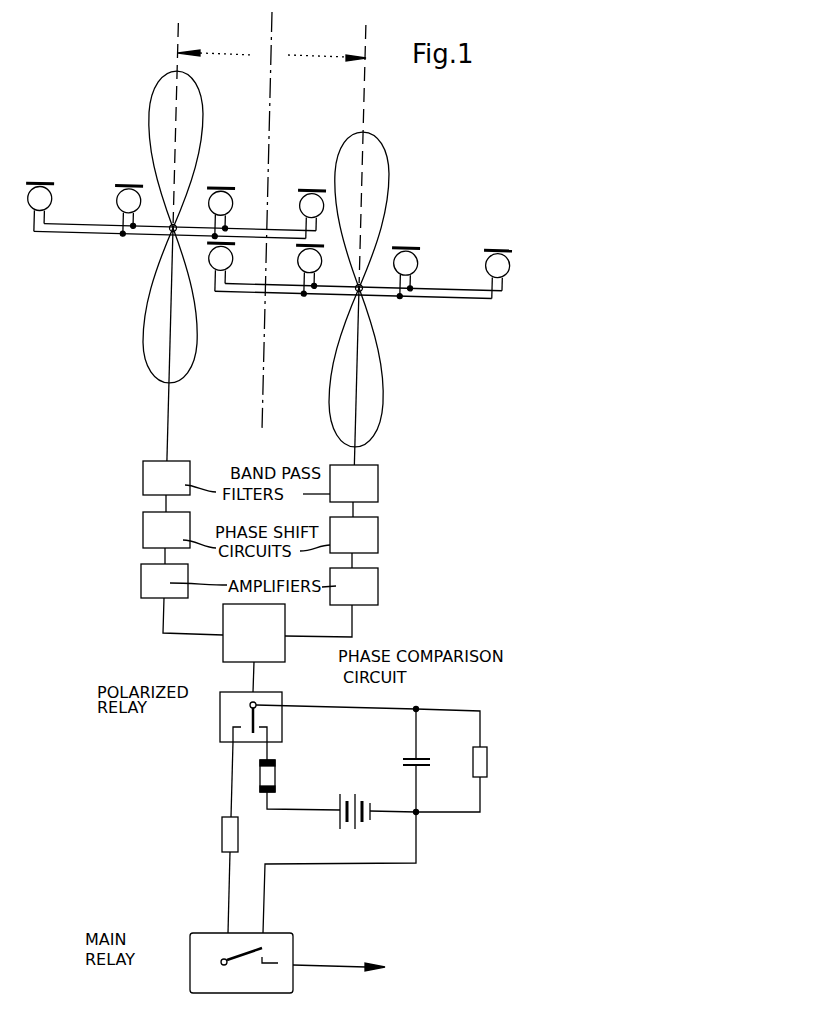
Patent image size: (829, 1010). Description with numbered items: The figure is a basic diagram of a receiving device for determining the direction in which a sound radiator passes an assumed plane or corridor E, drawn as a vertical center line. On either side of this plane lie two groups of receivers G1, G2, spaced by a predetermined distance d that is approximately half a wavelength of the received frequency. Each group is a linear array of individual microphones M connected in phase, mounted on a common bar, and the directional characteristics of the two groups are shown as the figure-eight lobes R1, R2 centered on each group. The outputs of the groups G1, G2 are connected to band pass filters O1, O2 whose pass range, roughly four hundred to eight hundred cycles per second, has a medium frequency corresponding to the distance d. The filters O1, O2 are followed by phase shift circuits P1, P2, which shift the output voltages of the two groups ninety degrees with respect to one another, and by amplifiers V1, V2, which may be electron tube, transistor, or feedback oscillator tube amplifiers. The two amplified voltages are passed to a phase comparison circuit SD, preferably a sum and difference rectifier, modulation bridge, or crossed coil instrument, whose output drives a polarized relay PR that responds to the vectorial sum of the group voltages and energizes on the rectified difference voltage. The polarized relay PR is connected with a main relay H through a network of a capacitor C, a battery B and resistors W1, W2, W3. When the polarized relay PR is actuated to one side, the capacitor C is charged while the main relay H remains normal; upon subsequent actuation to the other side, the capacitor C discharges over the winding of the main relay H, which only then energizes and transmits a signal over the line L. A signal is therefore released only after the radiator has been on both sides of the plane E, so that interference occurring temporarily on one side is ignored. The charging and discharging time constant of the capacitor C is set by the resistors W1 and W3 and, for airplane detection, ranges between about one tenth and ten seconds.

The directional characteristic of first group of receivers R1 is at (164, 101).
The directional characteristic of second group of receivers R2 is at (373, 168).
The microphones M is at (118, 200).
The first group of receivers G1 is at (100, 236).
The second group of receivers G2 is at (454, 302).
The plane E is at (271, 20).
The distance d is at (272, 58).
The band pass filter O1 is at (158, 479).
The band pass filter O2 is at (367, 483).
The phase shift circuit P1 is at (157, 527).
The phase shift circuit P2 is at (367, 537).
The amplifier V1 is at (157, 583).
The amplifier V2 is at (360, 583).
The phase comparison circuit SD is at (263, 644).
The polarized relay PR is at (237, 703).
The resistor W1 is at (277, 780).
The resistor W2 is at (221, 834).
The resistor W3 is at (488, 762).
The battery B is at (358, 775).
The capacitor C is at (411, 758).
The main relay H is at (208, 952).
The line L is at (349, 968).